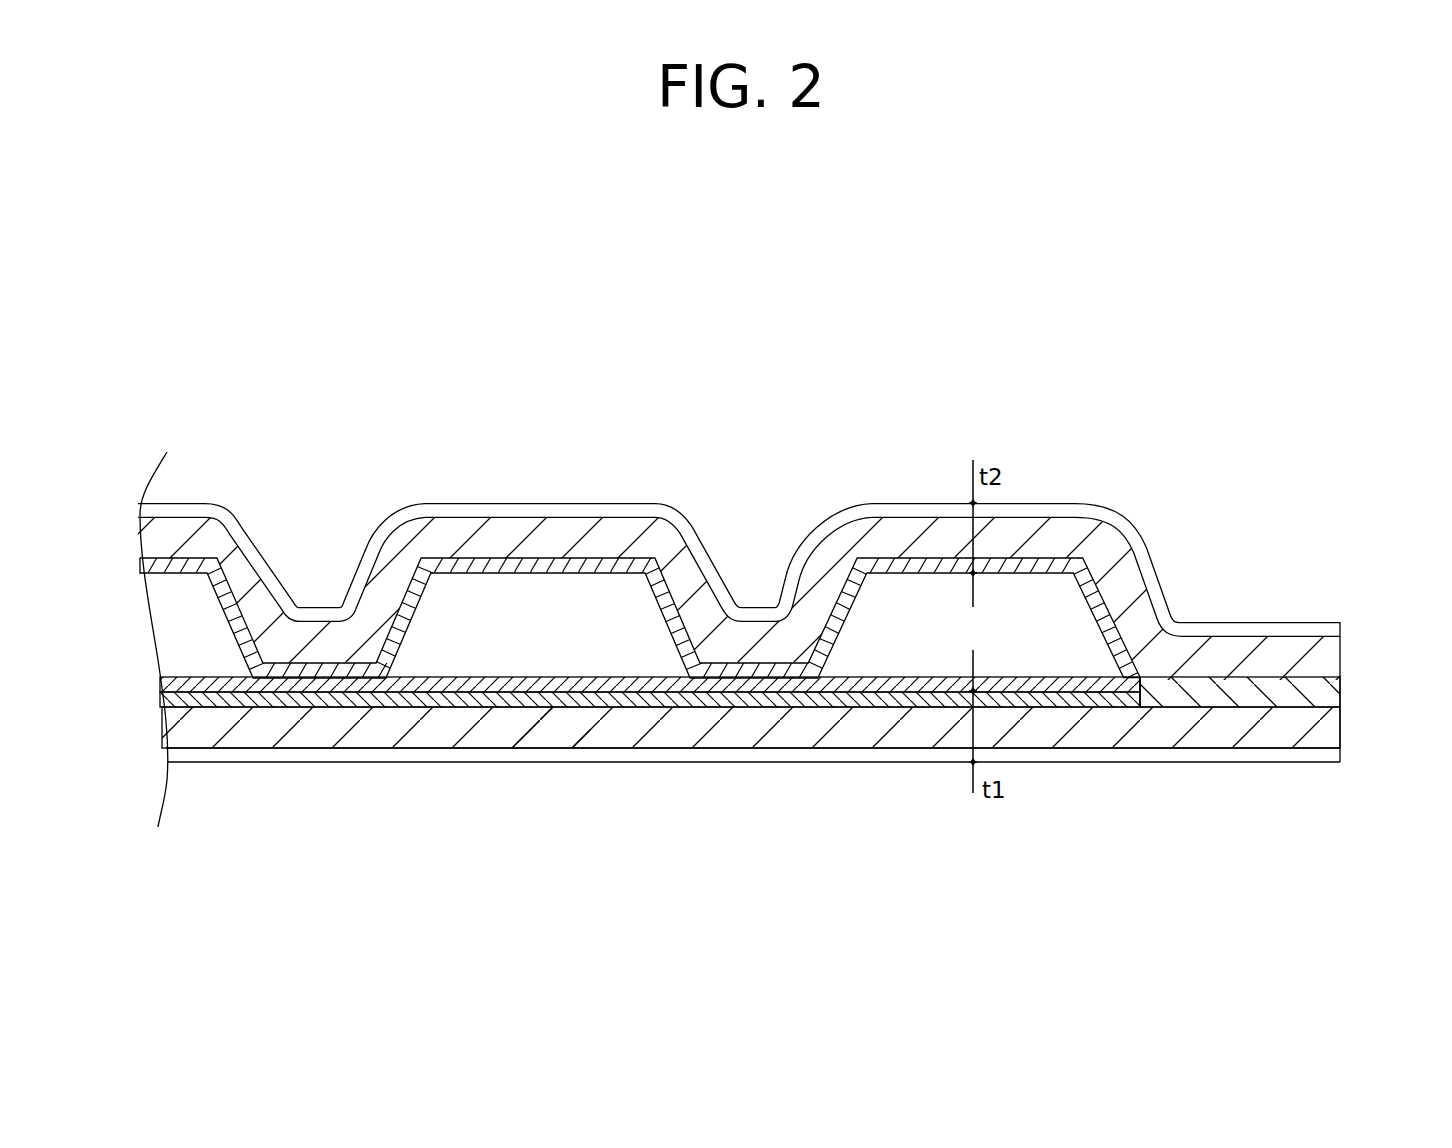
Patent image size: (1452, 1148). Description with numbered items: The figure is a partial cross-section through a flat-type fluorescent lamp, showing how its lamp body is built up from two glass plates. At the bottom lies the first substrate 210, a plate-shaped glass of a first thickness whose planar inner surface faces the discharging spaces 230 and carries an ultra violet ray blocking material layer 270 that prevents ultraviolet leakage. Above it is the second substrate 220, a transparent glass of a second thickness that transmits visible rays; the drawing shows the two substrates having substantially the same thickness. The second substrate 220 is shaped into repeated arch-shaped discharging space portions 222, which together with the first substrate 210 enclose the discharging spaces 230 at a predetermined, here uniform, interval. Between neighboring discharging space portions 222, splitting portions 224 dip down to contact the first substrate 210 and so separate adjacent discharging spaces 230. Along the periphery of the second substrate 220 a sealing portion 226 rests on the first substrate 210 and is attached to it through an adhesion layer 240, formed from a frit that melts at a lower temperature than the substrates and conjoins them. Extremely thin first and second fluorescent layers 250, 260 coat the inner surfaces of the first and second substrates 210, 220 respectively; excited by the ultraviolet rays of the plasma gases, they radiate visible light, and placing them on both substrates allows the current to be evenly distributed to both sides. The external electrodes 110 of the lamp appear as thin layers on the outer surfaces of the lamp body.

The external electrode 110 is at (1344, 626).
The first substrate 210 is at (1333, 728).
The second substrate 220 is at (1333, 655).
The discharging space portion 222 is at (897, 533).
The splitting portion 224 is at (758, 637).
The sealing portion 226 is at (1240, 653).
The discharging space 230 is at (517, 618).
The adhesion layer 240 is at (1333, 690).
The first fluorescent layer 250 is at (399, 688).
The second fluorescent layer 260 is at (602, 558).
The ultra violet ray blocking material layer 270 is at (543, 710).